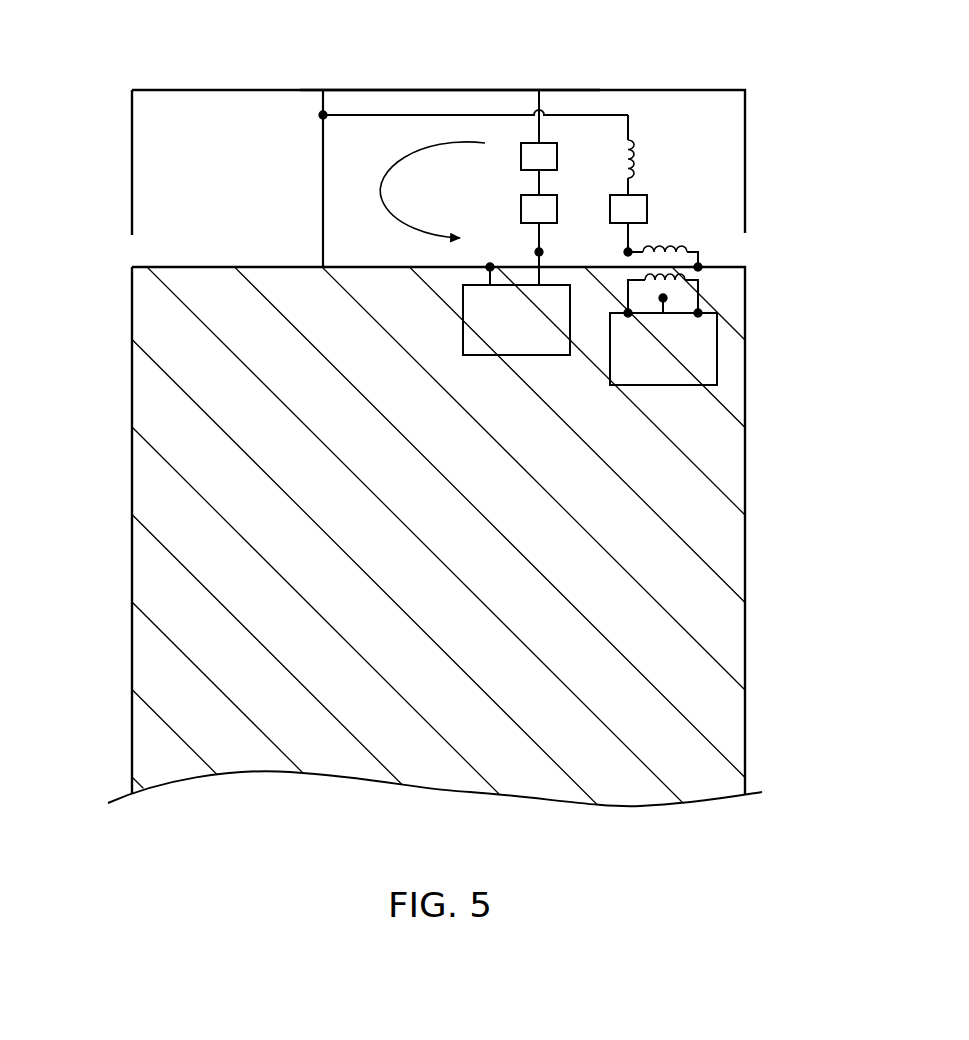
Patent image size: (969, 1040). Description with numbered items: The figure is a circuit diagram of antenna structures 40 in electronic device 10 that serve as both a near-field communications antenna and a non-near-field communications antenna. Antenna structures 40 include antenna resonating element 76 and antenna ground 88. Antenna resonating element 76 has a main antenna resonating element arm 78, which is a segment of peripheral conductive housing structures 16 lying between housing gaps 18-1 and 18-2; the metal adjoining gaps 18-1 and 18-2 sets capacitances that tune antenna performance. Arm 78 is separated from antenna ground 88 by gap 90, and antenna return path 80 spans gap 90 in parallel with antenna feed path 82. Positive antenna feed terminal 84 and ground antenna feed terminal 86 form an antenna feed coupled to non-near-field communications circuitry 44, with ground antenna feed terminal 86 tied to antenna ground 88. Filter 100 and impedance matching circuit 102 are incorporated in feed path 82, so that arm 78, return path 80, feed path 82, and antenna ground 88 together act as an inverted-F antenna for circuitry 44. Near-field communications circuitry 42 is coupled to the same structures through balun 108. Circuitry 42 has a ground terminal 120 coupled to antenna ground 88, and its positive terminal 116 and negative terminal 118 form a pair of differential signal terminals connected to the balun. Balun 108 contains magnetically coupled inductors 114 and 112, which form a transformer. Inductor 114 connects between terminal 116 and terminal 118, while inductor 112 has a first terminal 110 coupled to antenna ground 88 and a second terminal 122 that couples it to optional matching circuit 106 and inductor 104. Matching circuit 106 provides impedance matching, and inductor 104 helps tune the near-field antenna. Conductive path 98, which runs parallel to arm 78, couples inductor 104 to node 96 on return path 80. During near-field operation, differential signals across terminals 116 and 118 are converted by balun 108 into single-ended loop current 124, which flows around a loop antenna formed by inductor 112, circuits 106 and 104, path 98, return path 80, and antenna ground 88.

The electronic device 10 is at (813, 77).
The peripheral conductive housing structures 16 is at (748, 55).
The gap 18-1 is at (747, 252).
The gap 18-2 is at (123, 256).
The antenna structures 40 is at (87, 72).
The near-field communications circuitry 42 is at (662, 386).
The non-near-field communications circuitry 44 is at (512, 354).
The antenna resonating element 76 is at (78, 87).
The main antenna resonating element arm 78 is at (435, 90).
The antenna return path 80 is at (322, 177).
The antenna feed path 82 is at (491, 196).
The positive antenna feed terminal 84 is at (537, 251).
The ground antenna feed terminal 86 is at (487, 270).
The antenna ground 88 is at (142, 488).
The gap 90 is at (200, 98).
The node 96 is at (319, 114).
The conductive path 98 is at (382, 118).
The filter 100 is at (557, 157).
The impedance matching circuit 102 is at (557, 205).
The inductor 104 is at (648, 159).
The matching circuit 106 is at (648, 199).
The balun 108 is at (692, 231).
The terminal 110 is at (702, 267).
The inductor 112 is at (665, 246).
The inductor 114 is at (647, 285).
The positive terminal 116 is at (612, 308).
The negative terminal 118 is at (704, 316).
The ground terminal 120 is at (668, 298).
The terminal 122 is at (626, 252).
The loop current 124 is at (398, 220).